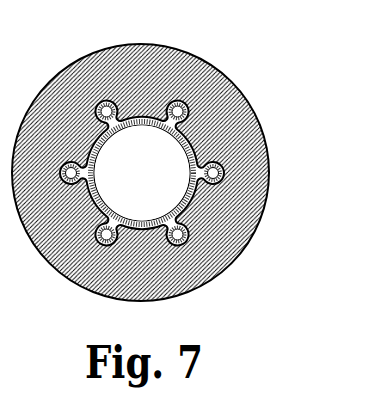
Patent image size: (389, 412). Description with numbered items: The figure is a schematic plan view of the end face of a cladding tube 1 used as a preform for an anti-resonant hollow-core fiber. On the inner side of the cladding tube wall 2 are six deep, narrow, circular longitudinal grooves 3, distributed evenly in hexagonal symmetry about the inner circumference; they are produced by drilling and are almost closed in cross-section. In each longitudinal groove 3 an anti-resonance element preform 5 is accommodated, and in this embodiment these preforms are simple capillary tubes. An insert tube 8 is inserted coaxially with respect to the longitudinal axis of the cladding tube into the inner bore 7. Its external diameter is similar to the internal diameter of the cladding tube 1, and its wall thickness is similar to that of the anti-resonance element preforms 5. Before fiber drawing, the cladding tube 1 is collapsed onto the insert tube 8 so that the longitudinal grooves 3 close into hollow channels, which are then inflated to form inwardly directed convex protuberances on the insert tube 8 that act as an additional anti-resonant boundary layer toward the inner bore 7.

The cladding tube 1 is at (230, 65).
The cladding tube wall 2 is at (62, 100).
The longitudinal grooves 3 is at (115, 237).
The anti-resonance element preforms 5 is at (187, 240).
The inner bore 7 is at (117, 168).
The insert tube 8 is at (190, 150).